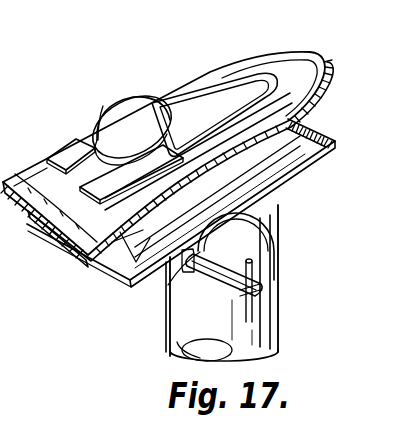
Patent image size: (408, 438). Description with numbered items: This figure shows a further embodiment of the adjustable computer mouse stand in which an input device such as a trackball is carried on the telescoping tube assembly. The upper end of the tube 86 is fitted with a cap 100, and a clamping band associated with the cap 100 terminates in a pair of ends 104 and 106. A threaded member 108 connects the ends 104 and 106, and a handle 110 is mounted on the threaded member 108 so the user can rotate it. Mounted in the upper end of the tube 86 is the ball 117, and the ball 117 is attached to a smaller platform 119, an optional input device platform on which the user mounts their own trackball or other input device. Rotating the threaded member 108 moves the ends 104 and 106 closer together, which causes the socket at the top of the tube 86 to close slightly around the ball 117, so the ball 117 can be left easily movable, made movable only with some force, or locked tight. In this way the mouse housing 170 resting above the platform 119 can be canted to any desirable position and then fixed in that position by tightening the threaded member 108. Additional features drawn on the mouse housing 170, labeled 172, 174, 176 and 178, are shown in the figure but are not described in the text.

The tube 86 is at (280, 333).
The cap 100 is at (279, 250).
The end 104 is at (181, 209).
The end 106 is at (175, 290).
The threaded member 108 is at (171, 322).
The handle 110 is at (258, 270).
The ball 117 is at (272, 207).
The platform 119 is at (327, 128).
The mouse housing 170 is at (288, 60).
The dome 172 is at (122, 107).
The inner recess 174 is at (200, 90).
The raised block 176 is at (66, 142).
The stern piece 178 is at (56, 233).